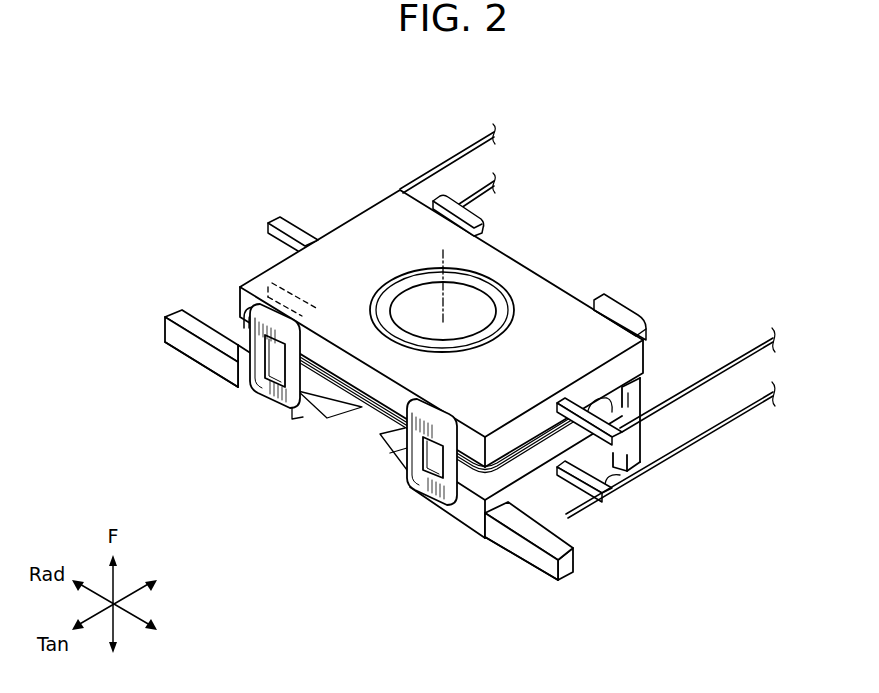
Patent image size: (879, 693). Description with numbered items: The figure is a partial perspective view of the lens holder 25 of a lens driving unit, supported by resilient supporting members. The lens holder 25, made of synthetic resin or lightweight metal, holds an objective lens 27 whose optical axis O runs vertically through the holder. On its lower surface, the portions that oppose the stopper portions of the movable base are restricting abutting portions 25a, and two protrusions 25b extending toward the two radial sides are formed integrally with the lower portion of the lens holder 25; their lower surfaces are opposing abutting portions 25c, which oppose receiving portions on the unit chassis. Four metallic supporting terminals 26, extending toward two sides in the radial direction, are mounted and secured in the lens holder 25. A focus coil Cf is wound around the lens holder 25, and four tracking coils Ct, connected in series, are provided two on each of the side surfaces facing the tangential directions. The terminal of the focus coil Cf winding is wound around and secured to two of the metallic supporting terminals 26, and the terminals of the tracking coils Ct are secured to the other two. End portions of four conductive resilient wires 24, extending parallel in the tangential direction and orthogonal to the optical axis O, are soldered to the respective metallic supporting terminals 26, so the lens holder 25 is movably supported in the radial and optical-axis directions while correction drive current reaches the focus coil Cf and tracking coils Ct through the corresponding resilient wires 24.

The resilient wires 24 is at (487, 177).
The lens holder 25 is at (369, 200).
The restricting abutting portions 25a is at (273, 407).
The protrusions 25b is at (176, 316).
The opposing abutting portions 25c is at (193, 363).
The metallic supporting terminals 26 is at (277, 220).
The objective lens 27 is at (472, 303).
The tracking coils Ct is at (244, 316).
The focus coil Cf is at (541, 440).
The optical axis O is at (442, 272).